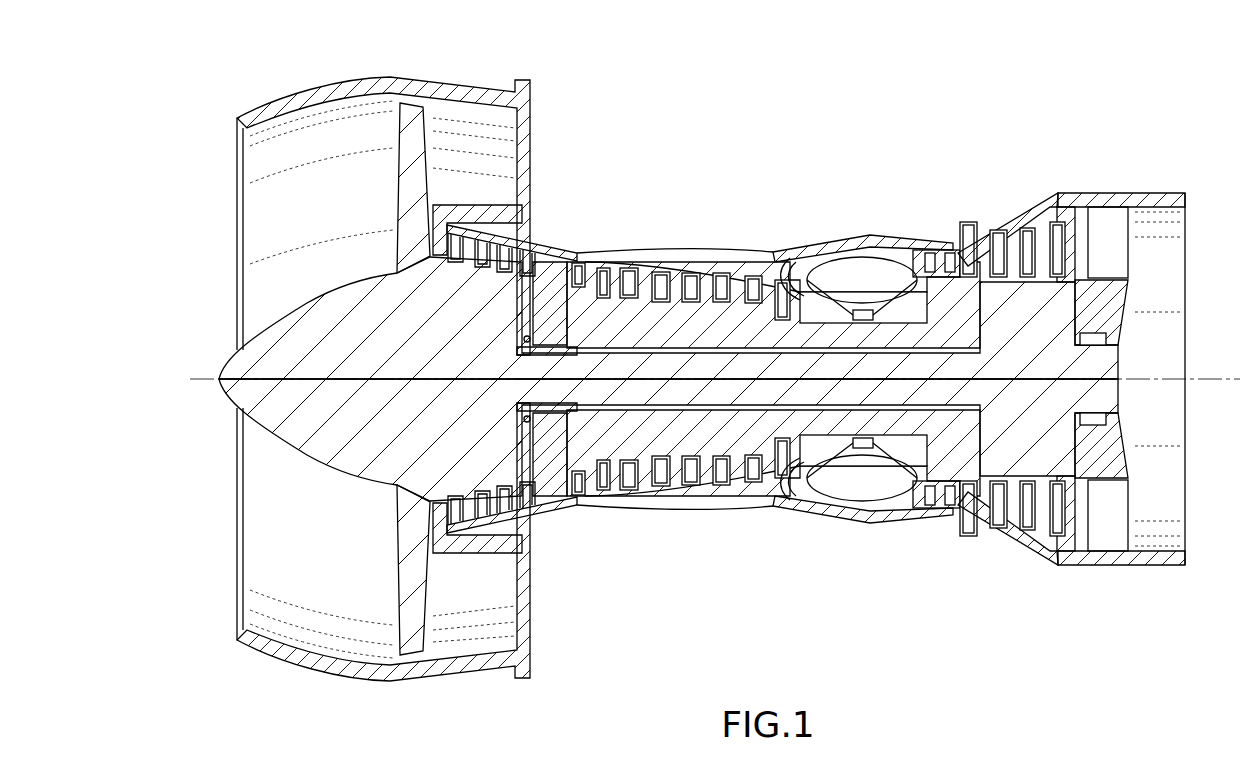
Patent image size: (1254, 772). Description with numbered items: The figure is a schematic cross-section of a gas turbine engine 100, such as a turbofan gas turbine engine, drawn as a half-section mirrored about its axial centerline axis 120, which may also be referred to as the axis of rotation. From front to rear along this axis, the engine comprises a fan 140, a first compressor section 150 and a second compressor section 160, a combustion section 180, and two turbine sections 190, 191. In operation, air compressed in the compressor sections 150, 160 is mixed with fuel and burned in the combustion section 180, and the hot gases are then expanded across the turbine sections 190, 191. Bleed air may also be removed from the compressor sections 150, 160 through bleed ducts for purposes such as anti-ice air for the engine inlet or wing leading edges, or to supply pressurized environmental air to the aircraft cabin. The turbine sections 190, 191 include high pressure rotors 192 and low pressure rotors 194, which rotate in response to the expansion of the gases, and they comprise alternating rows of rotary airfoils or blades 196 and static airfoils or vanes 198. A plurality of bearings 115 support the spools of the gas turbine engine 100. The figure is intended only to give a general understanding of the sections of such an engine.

The gas turbine engine 100 is at (935, 131).
The bearings 115 is at (1100, 328).
The axial centerline axis 120 is at (205, 378).
The fan 140 is at (433, 140).
The compressor section 150 is at (520, 686).
The compressor section 160 is at (598, 516).
The combustion section 180 is at (915, 534).
The turbine section 190 is at (920, 579).
The turbine section 191 is at (985, 579).
The high pressure rotors 192 is at (960, 240).
The low pressure rotors 194 is at (1070, 294).
The blades 196 is at (1013, 238).
The vanes 198 is at (1028, 222).